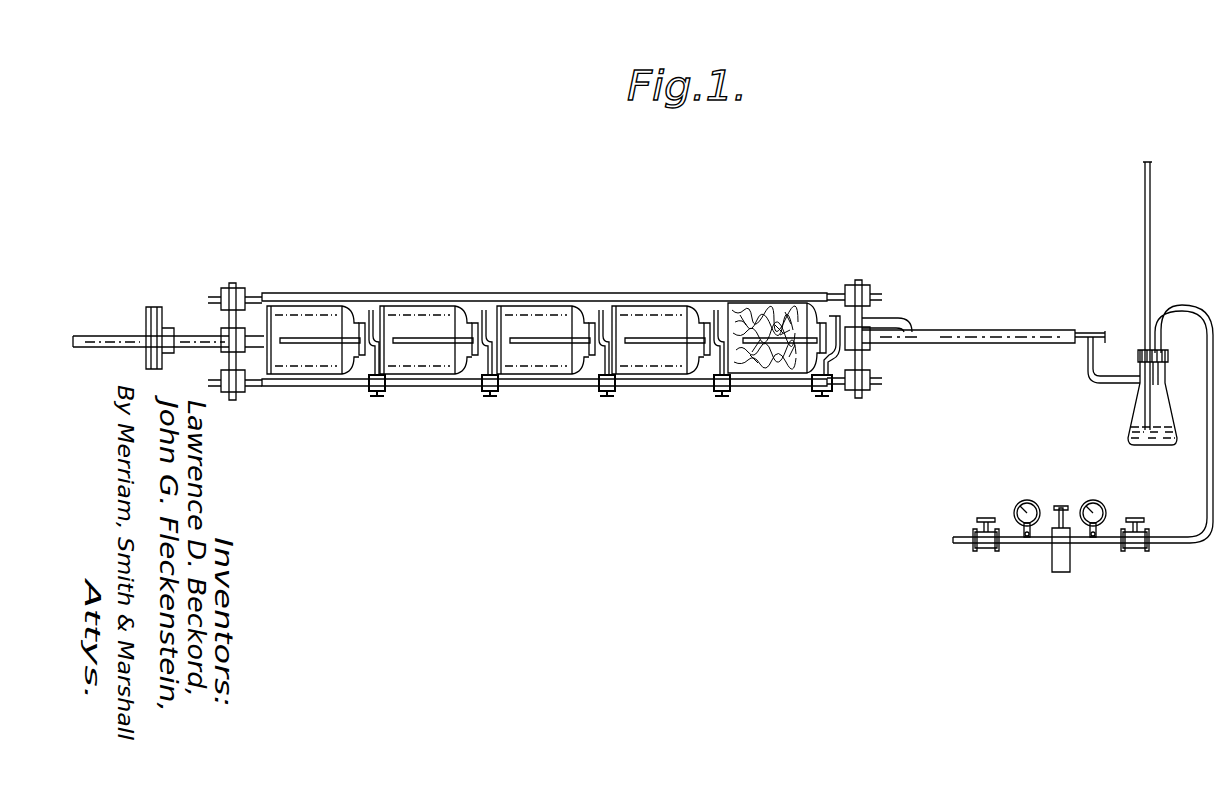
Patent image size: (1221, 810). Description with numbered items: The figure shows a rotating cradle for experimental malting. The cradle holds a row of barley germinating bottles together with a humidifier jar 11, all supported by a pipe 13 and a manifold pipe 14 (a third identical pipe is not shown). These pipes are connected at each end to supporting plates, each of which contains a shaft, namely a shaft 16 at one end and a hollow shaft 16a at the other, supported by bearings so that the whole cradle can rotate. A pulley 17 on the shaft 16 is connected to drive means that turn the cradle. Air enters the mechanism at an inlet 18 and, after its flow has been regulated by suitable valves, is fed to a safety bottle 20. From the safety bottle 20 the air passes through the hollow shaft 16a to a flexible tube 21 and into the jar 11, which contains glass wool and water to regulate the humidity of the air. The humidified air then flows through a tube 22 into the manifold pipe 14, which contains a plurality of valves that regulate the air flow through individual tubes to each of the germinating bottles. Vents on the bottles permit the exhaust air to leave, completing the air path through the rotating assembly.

The humidifier jar 11 is at (767, 303).
The pipe 13 is at (534, 292).
The manifold pipe 14 is at (536, 387).
The shaft 16 is at (121, 335).
The hollow shaft 16a is at (1016, 331).
The pulley 17 is at (158, 307).
The air inlet 18 is at (953, 538).
The safety bottle 20 is at (1140, 413).
The flexible tube 21 is at (906, 320).
The tube 22 is at (834, 382).